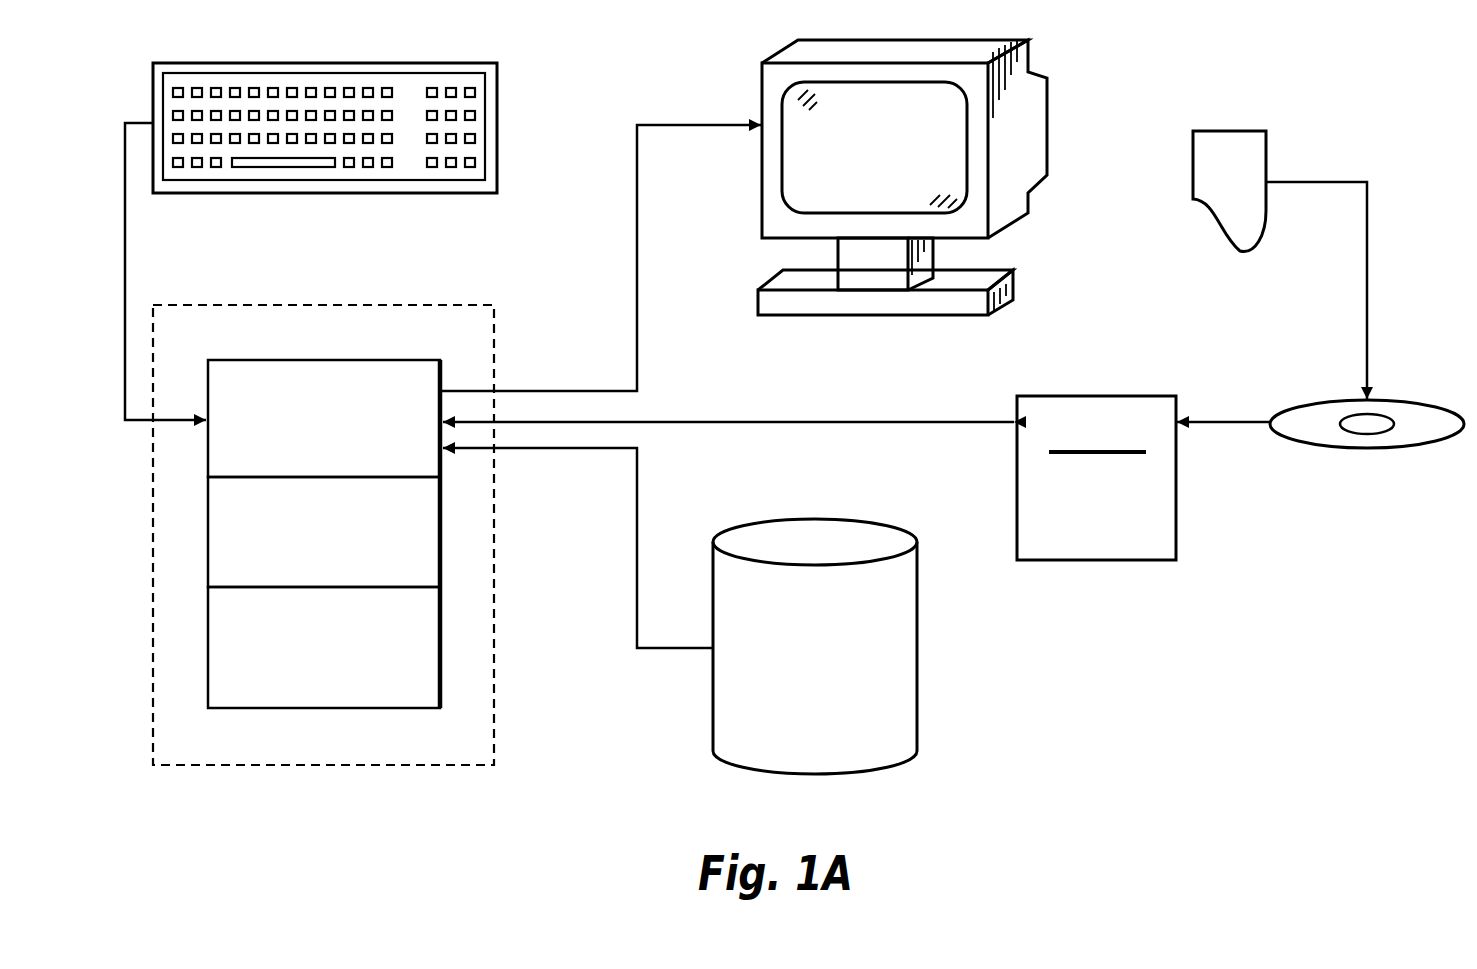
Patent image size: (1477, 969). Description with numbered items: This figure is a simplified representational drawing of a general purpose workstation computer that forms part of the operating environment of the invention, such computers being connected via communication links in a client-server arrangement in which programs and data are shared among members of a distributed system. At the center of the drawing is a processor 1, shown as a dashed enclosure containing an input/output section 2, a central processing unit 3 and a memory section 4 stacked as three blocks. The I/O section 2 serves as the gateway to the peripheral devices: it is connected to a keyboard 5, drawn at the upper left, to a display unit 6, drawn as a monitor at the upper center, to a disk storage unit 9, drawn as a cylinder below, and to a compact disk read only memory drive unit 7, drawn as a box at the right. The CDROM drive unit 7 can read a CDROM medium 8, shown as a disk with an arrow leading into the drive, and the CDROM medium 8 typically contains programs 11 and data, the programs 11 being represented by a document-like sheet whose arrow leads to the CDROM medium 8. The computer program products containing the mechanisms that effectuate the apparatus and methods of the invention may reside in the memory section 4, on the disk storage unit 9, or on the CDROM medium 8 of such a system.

The processor 1 is at (445, 305).
The input/output section 2 is at (300, 365).
The central processing unit 3 is at (442, 550).
The memory section 4 is at (442, 690).
The keyboard 5 is at (475, 65).
The display unit 6 is at (973, 50).
The CDROM drive unit 7 is at (1049, 396).
The CDROM medium 8 is at (1342, 403).
The disk storage unit 9 is at (913, 622).
The programs 11 is at (1207, 140).